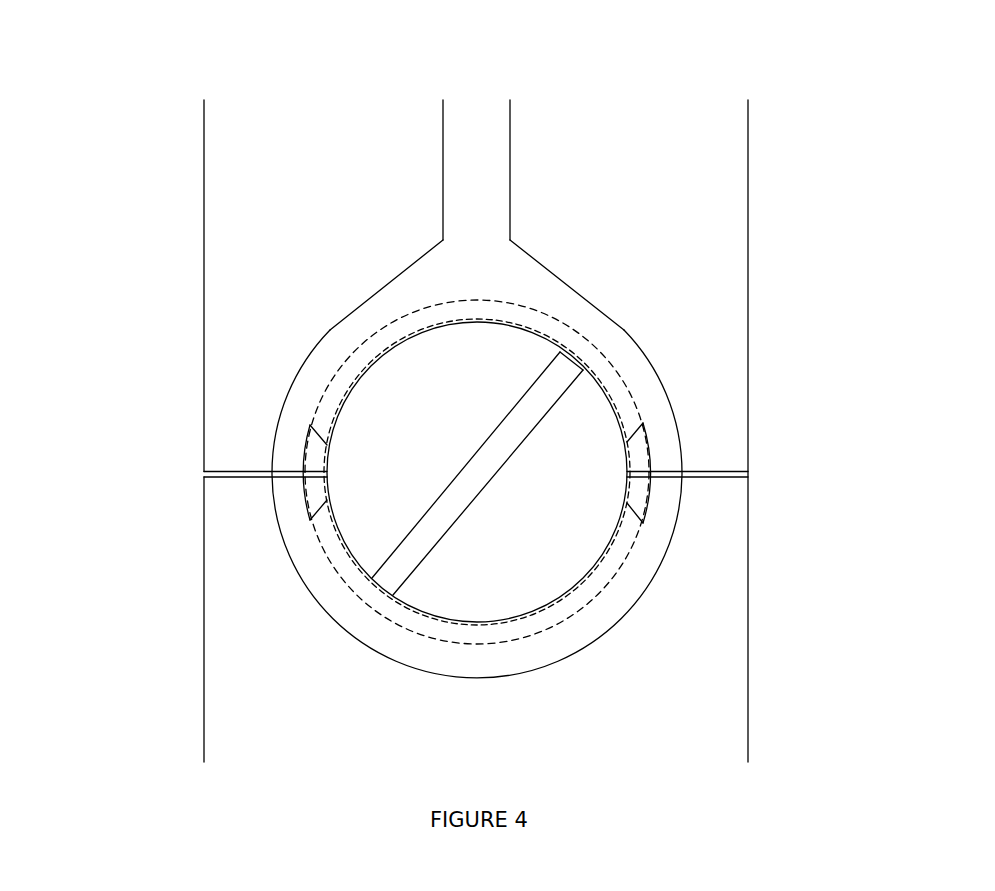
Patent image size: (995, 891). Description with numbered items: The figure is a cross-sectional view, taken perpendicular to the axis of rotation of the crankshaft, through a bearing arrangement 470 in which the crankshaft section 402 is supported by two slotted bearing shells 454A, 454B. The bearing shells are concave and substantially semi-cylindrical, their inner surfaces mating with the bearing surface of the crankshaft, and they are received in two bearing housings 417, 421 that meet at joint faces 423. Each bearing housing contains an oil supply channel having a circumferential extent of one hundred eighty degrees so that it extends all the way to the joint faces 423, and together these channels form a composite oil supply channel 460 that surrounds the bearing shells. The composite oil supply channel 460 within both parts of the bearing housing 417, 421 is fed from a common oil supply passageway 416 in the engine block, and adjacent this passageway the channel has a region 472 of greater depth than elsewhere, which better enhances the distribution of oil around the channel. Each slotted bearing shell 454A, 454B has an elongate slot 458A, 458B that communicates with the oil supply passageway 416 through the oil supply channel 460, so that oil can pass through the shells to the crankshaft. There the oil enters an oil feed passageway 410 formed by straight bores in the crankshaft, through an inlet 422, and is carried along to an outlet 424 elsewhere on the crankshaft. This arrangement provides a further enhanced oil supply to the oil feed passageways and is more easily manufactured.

The bearing arrangement 470 is at (415, 403).
The region of greater depth 472 is at (430, 273).
The oil supply passageway 416 is at (500, 175).
The composite oil supply channel 460 is at (573, 313).
The bearing housing 417 is at (237, 240).
The elongate slot 458A is at (355, 352).
The inlet 422 is at (574, 367).
The crankshaft section 402 is at (368, 422).
The joint faces 423 is at (243, 470).
The slotted bearing shell 454A is at (638, 452).
The slotted bearing shell 454B is at (638, 495).
The oil feed passageway 410 is at (450, 500).
The bearing housing 421 is at (227, 675).
The outlet 424 is at (388, 580).
The elongate slot 458B is at (532, 628).